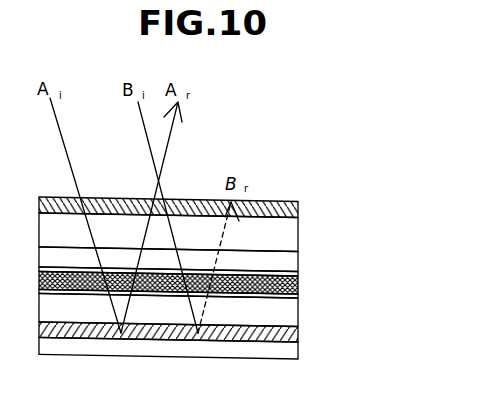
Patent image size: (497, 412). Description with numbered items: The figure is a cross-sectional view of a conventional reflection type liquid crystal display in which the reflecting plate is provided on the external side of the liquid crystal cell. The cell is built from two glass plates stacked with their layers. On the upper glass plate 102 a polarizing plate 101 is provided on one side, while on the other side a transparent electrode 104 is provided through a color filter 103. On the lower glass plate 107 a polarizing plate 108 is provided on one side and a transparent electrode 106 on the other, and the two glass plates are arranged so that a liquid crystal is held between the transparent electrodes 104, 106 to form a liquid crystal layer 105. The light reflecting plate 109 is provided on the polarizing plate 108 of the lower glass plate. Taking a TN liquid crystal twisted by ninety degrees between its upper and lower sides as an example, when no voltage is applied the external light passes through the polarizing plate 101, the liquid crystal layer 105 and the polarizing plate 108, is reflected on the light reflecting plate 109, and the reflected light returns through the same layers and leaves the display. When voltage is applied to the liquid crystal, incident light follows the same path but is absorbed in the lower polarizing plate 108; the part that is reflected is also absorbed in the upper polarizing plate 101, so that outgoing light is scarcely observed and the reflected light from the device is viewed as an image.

The polarizing plate 101 is at (297, 203).
The glass plate 102 is at (286, 234).
The color filter 103 is at (292, 262).
The transparent electrode 104 is at (297, 268).
The liquid crystal layer 105 is at (297, 280).
The transparent electrode 106 is at (297, 292).
The glass plate 107 is at (287, 314).
The polarizing plate 108 is at (297, 333).
The light reflecting plate 109 is at (287, 349).